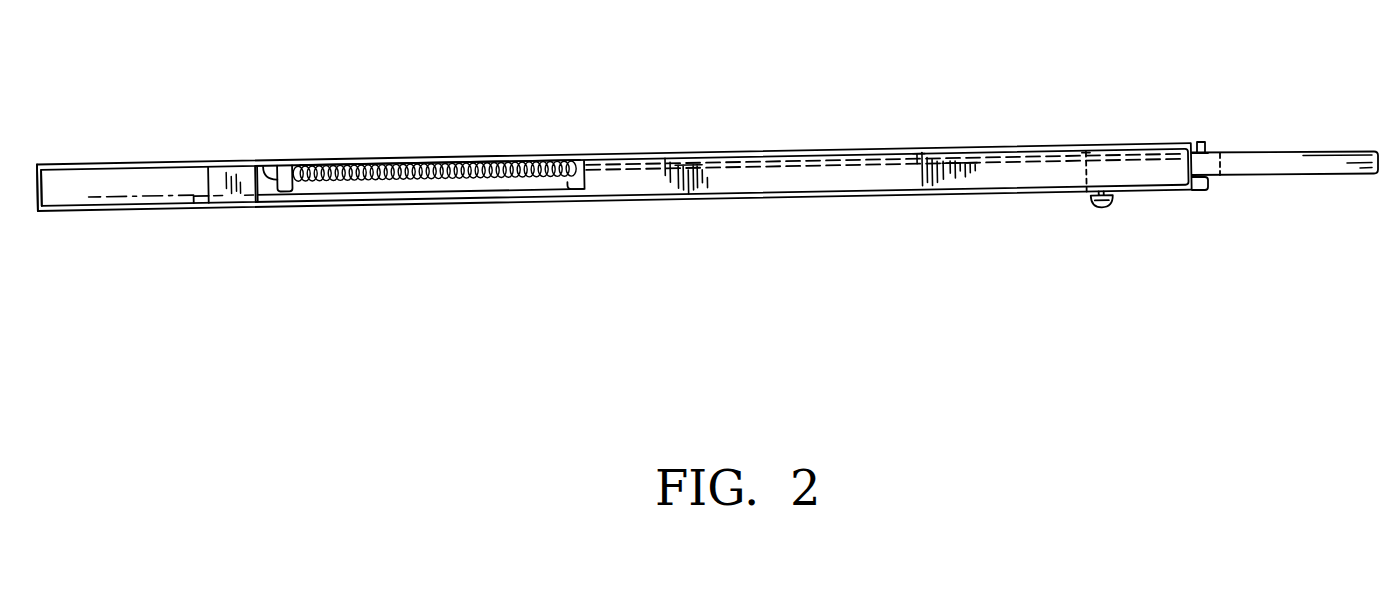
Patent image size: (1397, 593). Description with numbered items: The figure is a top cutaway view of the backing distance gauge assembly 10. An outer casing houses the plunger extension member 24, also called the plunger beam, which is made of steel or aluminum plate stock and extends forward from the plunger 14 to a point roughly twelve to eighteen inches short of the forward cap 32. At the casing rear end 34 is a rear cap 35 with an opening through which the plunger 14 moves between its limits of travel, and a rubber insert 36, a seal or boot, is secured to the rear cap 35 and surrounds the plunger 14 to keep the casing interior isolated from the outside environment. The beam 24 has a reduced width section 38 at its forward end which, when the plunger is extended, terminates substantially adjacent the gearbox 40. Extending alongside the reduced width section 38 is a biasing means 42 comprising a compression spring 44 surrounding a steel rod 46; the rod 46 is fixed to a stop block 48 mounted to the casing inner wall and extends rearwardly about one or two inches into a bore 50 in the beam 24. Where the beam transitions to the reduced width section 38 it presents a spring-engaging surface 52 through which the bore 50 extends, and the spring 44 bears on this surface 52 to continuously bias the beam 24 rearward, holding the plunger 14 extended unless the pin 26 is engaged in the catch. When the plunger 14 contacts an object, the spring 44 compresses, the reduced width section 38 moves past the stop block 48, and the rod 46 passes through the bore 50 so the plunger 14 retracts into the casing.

The assembly 10 is at (562, 108).
The plunger 14 is at (1297, 175).
The plunger extension member 24 is at (740, 184).
The pin 26 is at (1093, 210).
The cap 32 is at (40, 191).
The rear end 34 is at (1221, 198).
The cap 35 is at (1206, 148).
The rubber insert 36 is at (1195, 134).
The reduced width section 38 is at (423, 195).
The gearbox 40 is at (217, 162).
The biasing means 42 is at (409, 146).
The compression spring 44 is at (330, 157).
The steel rod 46 is at (282, 158).
The stop block 48 is at (262, 160).
The bore 50 is at (750, 162).
The spring-engaging surface 52 is at (568, 189).